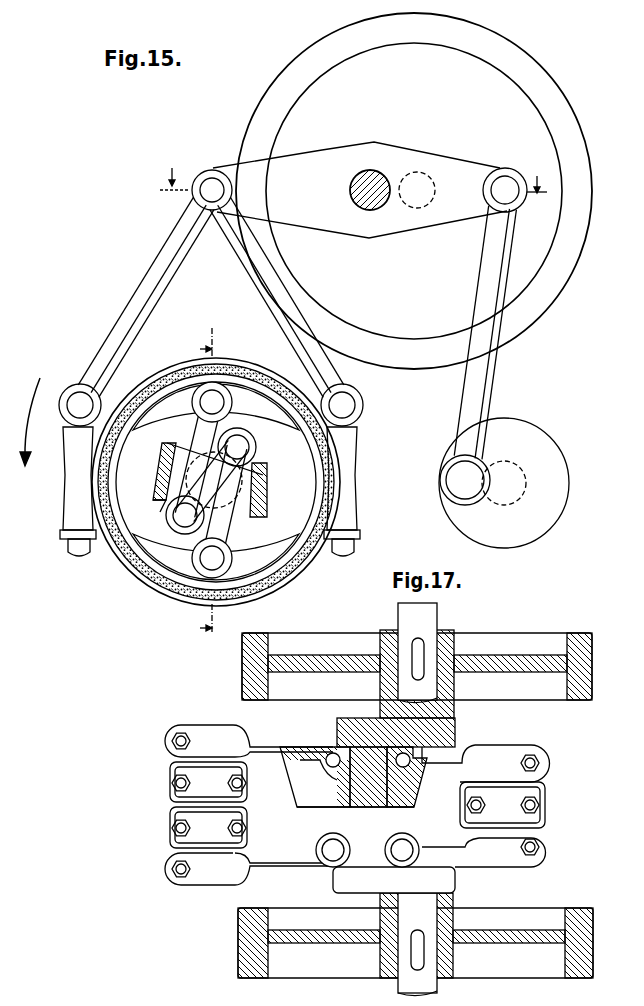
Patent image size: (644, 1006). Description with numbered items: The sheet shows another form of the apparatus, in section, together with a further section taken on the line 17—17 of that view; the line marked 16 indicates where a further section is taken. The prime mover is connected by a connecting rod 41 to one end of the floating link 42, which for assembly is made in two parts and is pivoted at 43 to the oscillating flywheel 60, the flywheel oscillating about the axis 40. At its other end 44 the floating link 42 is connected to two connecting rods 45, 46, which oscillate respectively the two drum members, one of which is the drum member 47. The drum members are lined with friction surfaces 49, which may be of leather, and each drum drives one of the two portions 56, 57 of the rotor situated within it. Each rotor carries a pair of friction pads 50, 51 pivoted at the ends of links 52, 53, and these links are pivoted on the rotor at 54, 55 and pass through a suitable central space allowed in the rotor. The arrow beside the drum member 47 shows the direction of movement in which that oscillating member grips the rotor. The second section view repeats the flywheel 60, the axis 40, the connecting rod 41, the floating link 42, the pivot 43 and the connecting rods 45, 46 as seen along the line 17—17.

In FIG. 15, the section line 16 is at (196, 483).
In FIG. 15, the section line 17— 17 is at (357, 185).
In FIG. 15, the axis 40 is at (419, 198).
In FIG. 17, the axis 40 is at (415, 624).
In FIG. 15, the connecting rod 41 is at (479, 380).
In FIG. 17, the connecting rod 41 is at (502, 812).
In FIG. 15, the floating link 42 is at (457, 185).
In FIG. 17, the floating link 42 is at (440, 817).
In FIG. 15, the pivot 43 is at (372, 187).
In FIG. 17, the pivot 43 is at (337, 747).
In FIG. 15, the other end of the floating link 44 is at (210, 192).
In FIG. 15, the connecting rod 45 is at (157, 280).
In FIG. 17, the connecting rod 45 is at (168, 827).
In FIG. 15, the connecting rod 46 is at (262, 282).
In FIG. 17, the connecting rod 46 is at (173, 782).
In FIG. 15, the drum member 47 is at (92, 449).
In FIG. 15, the friction surfaces 49 is at (93, 499).
In FIG. 15, the friction pad 50 is at (173, 405).
In FIG. 15, the friction pad 51 is at (248, 556).
In FIG. 15, the link 52 is at (192, 476).
In FIG. 15, the link 53 is at (227, 494).
In FIG. 15, the pivot 54 is at (133, 533).
In FIG. 15, the pivot 55 is at (233, 447).
In FIG. 15, the rotor portion 56 is at (170, 478).
In FIG. 15, the rotor portion 57 is at (253, 490).
In FIG. 15, the oscillating flywheel 60 is at (569, 127).
In FIG. 17, the oscillating flywheel 60 is at (254, 661).